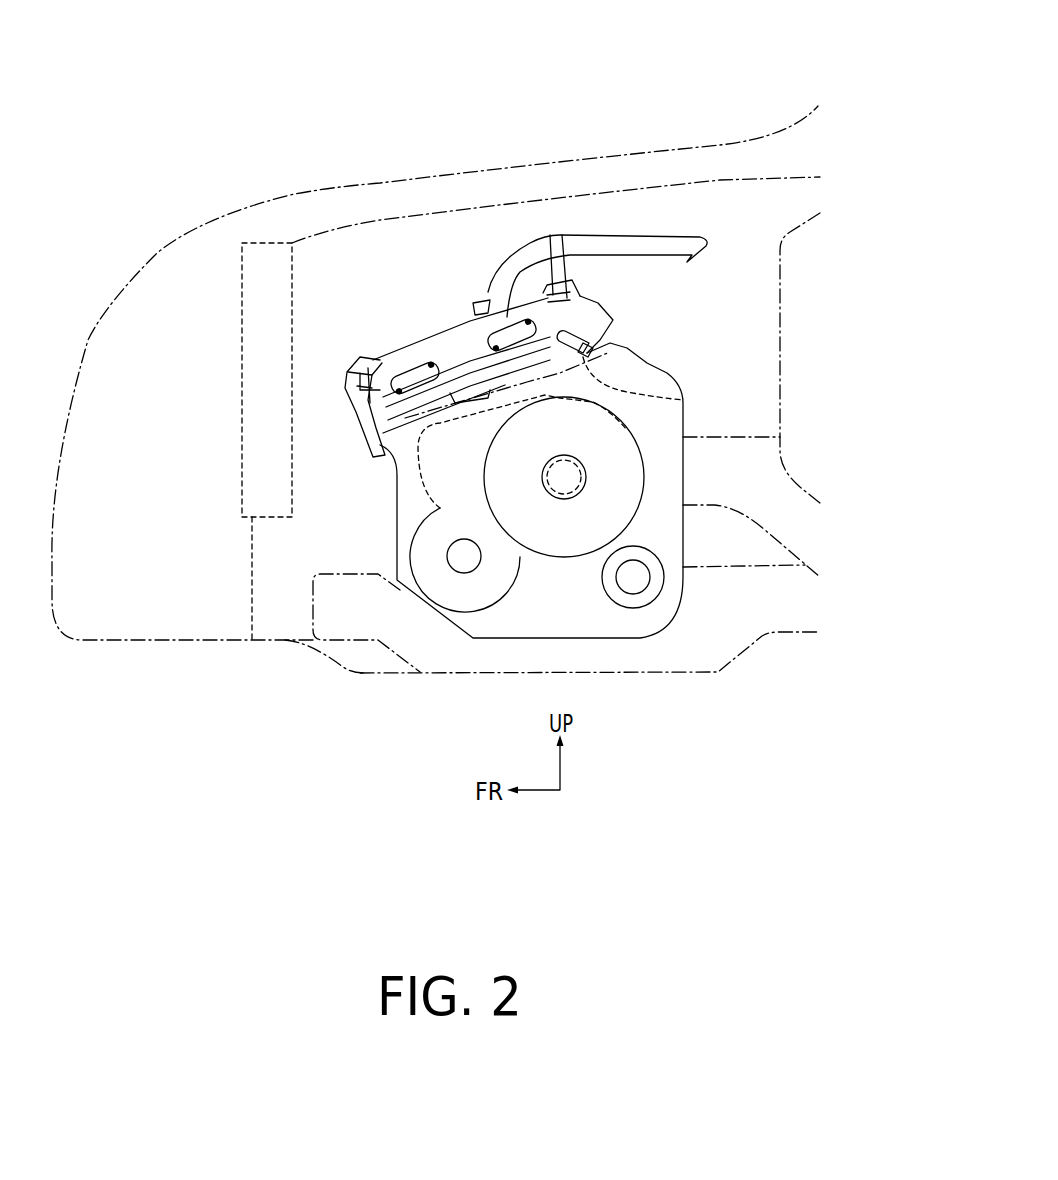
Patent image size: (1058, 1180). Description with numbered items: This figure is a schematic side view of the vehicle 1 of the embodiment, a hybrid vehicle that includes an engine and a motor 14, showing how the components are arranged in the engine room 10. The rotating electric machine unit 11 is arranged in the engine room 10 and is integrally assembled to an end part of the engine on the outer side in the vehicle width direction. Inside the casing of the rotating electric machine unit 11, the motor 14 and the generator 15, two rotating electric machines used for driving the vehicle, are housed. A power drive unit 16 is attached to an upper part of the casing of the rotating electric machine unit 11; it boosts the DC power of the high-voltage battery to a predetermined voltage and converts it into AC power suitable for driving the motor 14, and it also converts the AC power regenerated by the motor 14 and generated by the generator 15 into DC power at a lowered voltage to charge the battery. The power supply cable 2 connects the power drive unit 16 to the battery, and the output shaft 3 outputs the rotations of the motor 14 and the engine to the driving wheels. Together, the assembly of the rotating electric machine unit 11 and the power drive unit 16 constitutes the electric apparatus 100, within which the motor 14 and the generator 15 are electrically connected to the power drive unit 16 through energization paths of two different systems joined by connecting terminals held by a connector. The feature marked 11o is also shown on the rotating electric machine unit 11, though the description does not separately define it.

The vehicle 1 is at (394, 102).
The engine room 10 is at (347, 245).
The power supply cable 2 is at (628, 237).
The electric apparatus 100 is at (603, 197).
The power drive unit 16 is at (400, 334).
The rotating electric machine unit 11 is at (684, 369).
The pin 11o is at (585, 357).
The motor 14 is at (635, 500).
The generator 15 is at (440, 600).
The output shaft 3 is at (647, 593).